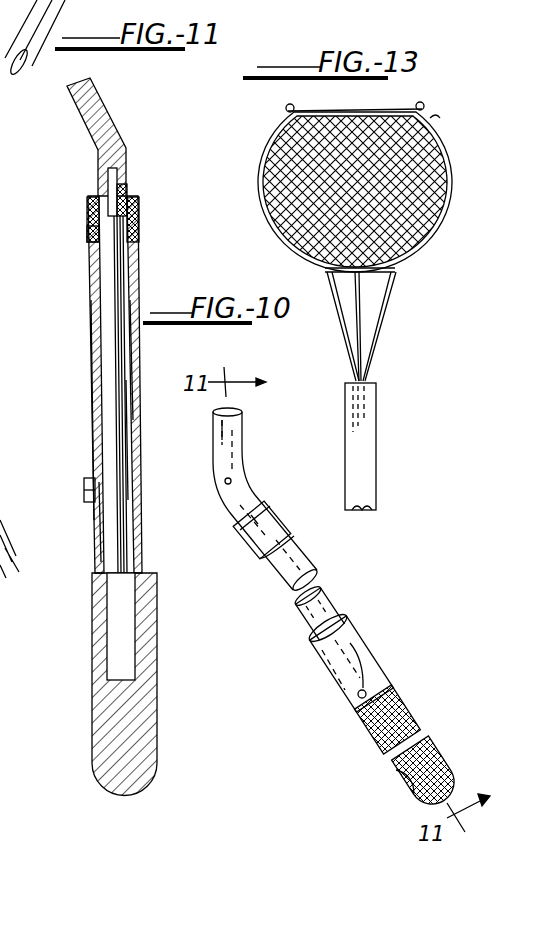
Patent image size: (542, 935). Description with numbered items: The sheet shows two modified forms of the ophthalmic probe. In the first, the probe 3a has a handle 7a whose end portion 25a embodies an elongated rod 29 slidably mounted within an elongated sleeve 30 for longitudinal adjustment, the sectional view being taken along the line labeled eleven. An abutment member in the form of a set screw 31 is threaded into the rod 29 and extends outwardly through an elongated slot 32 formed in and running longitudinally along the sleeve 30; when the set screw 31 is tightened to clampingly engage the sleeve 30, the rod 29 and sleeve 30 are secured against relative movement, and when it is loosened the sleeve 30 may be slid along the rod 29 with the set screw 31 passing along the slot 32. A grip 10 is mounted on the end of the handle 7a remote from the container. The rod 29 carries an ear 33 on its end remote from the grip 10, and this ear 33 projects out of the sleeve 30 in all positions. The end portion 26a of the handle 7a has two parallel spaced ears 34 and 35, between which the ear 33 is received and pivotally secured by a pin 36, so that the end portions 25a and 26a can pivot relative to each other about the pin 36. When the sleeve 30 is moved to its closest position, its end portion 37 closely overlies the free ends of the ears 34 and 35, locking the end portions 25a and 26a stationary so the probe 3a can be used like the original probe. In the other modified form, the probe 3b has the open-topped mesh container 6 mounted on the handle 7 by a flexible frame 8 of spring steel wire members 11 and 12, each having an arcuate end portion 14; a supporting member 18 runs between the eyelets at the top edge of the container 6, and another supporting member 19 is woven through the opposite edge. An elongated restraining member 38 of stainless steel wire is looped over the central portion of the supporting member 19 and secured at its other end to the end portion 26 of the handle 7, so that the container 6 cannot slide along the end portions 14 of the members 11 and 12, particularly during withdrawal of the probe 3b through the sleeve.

In FIG. 11, the probe 3a is at (132, 355).
In FIG. 10, the probe 3a is at (441, 752).
In FIG. 13, the probe 3b is at (372, 506).
In FIG. 13, the container 6 is at (410, 168).
In FIG. 13, the handle 7 is at (372, 486).
In FIG. 11, the handle 7a is at (95, 398).
In FIG. 10, the handle 7a is at (410, 790).
In FIG. 13, the flexible frame 8 is at (430, 120).
In FIG. 11, the grip 10 is at (135, 722).
In FIG. 10, the grip 10 is at (405, 701).
In FIG. 13, the elongated member 11 is at (342, 346).
In FIG. 13, the elongated member 12 is at (385, 296).
In FIG. 13, the arcuate-shaped end portion 14 is at (262, 172).
In FIG. 13, the supporting member 18 is at (338, 112).
In FIG. 13, the supporting member 19 is at (325, 270).
In FIG. 11, the end portion 25a is at (128, 425).
In FIG. 13, the end portion 26 is at (368, 441).
In FIG. 11, the end portion 26a is at (73, 100).
In FIG. 10, the end portion 26a is at (233, 428).
In FIG. 11, the rod 29 is at (108, 281).
In FIG. 10, the rod 29 is at (318, 602).
In FIG. 11, the sleeve 30 is at (90, 332).
In FIG. 10, the sleeve 30 is at (262, 565).
In FIG. 11, the set screw 31 is at (86, 478).
In FIG. 10, the set screw 31 is at (356, 696).
In FIG. 11, the slot 32 is at (100, 520).
In FIG. 10, the slot 32 is at (366, 672).
In FIG. 11, the ear 33 is at (122, 200).
In FIG. 11, the ear 34 is at (92, 232).
In FIG. 11, the ear 35 is at (137, 214).
In FIG. 10, the ear 35 is at (236, 524).
In FIG. 11, the pin 36 is at (118, 180).
In FIG. 10, the pin 36 is at (228, 483).
In FIG. 11, the end portion 37 is at (90, 206).
In FIG. 10, the end portion 37 is at (250, 505).
In FIG. 13, the restraining member 38 is at (362, 310).